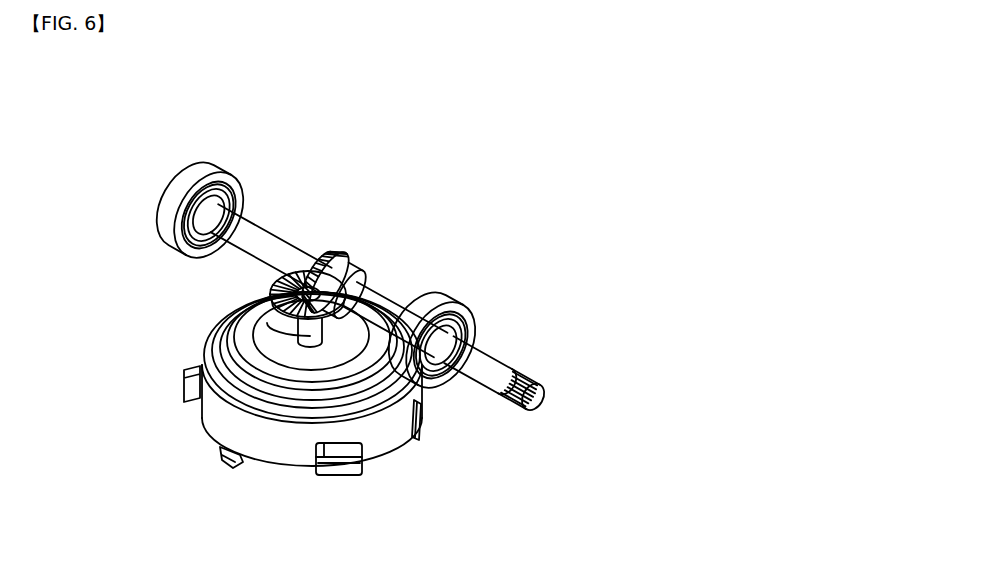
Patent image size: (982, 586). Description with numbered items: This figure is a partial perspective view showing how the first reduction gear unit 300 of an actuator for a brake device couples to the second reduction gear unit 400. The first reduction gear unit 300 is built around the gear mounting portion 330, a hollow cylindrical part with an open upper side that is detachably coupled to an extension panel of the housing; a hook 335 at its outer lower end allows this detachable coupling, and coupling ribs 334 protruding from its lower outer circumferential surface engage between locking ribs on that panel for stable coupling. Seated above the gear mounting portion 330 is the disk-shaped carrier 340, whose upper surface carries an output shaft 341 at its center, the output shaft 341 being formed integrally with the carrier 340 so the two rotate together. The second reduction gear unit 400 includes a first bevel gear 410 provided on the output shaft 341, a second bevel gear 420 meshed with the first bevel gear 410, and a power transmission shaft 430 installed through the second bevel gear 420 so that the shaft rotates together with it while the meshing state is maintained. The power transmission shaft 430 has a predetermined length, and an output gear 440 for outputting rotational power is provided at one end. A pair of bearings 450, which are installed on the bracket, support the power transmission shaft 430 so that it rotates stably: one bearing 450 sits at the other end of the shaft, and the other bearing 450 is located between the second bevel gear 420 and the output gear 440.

The first reduction gear unit 300 is at (188, 452).
The gear mounting portion 330 is at (260, 457).
The coupling rib 334 is at (342, 474).
The hook 335 is at (410, 443).
The carrier 340 is at (240, 310).
The output shaft 341 is at (205, 361).
The second reduction gear unit 400 is at (435, 198).
The first bevel gear 410 is at (284, 287).
The second bevel gear 420 is at (345, 247).
The power transmission shaft 430 is at (267, 232).
The output gear 440 is at (532, 377).
The bearing 450 is at (198, 163).